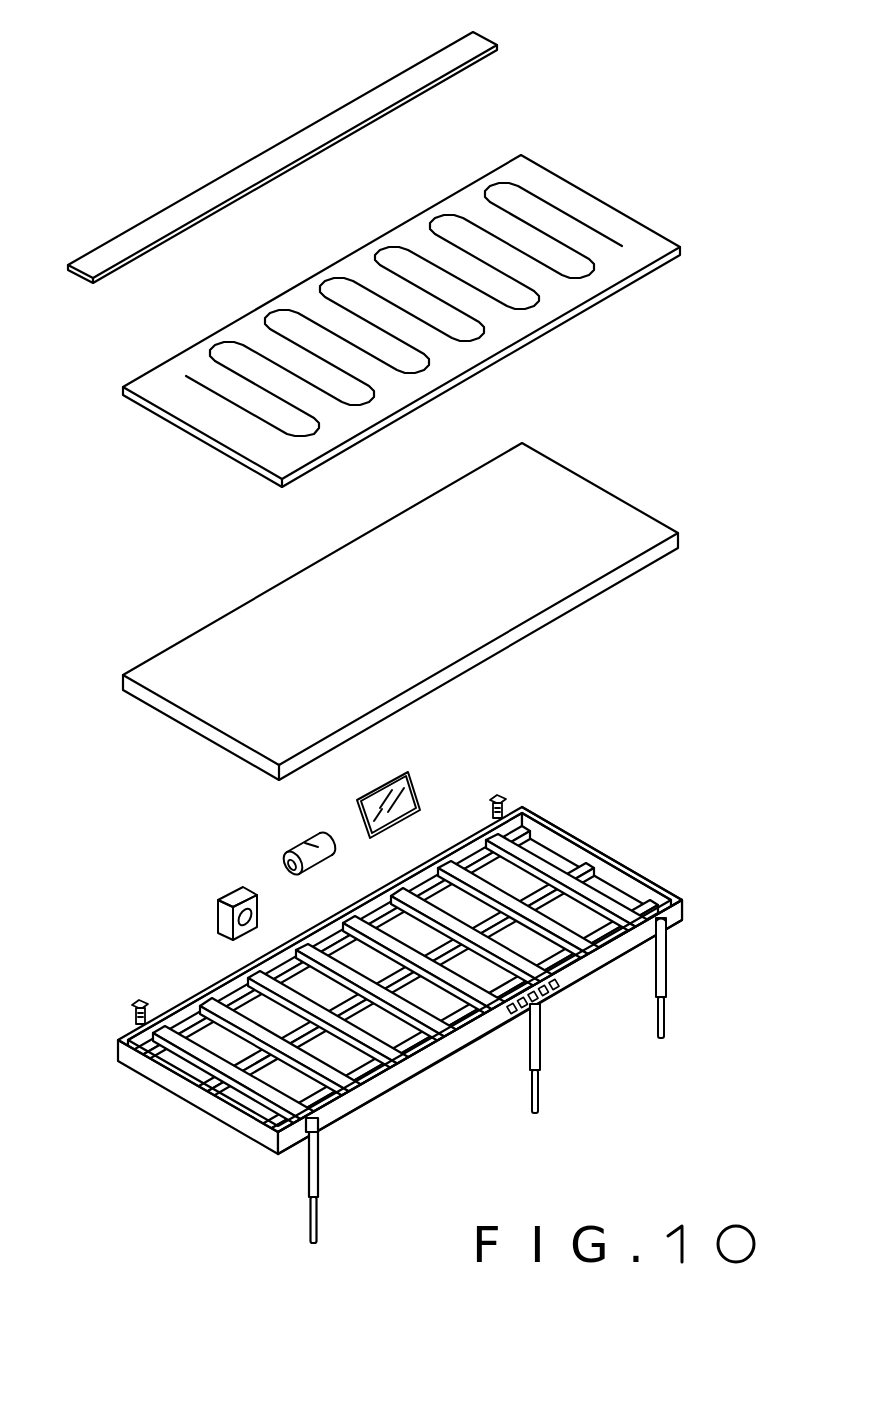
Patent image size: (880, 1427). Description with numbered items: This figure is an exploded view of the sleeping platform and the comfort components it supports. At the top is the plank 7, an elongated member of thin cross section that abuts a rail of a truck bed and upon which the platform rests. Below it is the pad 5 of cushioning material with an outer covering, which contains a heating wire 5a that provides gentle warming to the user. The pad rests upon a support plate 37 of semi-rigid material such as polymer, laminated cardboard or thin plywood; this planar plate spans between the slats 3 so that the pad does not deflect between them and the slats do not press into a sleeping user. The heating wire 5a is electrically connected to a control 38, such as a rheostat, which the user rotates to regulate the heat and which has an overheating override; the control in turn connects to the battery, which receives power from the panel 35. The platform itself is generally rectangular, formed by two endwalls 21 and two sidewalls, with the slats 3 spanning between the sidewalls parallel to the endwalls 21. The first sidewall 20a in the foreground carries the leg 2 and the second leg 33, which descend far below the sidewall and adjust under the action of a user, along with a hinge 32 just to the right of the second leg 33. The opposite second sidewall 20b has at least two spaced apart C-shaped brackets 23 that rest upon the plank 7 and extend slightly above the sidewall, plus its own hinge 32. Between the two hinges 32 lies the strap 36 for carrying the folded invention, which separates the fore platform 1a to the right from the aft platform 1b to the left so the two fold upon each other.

The first frame section 1a is at (592, 967).
The second frame section 1b is at (353, 1117).
The leg 2 is at (667, 973).
The slats 3 is at (557, 880).
The pad 5 is at (602, 198).
The heating wire 5a is at (597, 271).
The plank 7 is at (105, 253).
The first sidewall 20a is at (390, 1080).
The second sidewall 20b is at (223, 993).
The endwalls 21 is at (652, 887).
The brackets 23 is at (497, 795).
The hinge 32 is at (515, 1017).
The second leg 33 is at (540, 1080).
The panel 35 is at (408, 772).
The strap 36 is at (440, 1010).
The support plate 37 is at (632, 535).
The control 38 is at (217, 920).